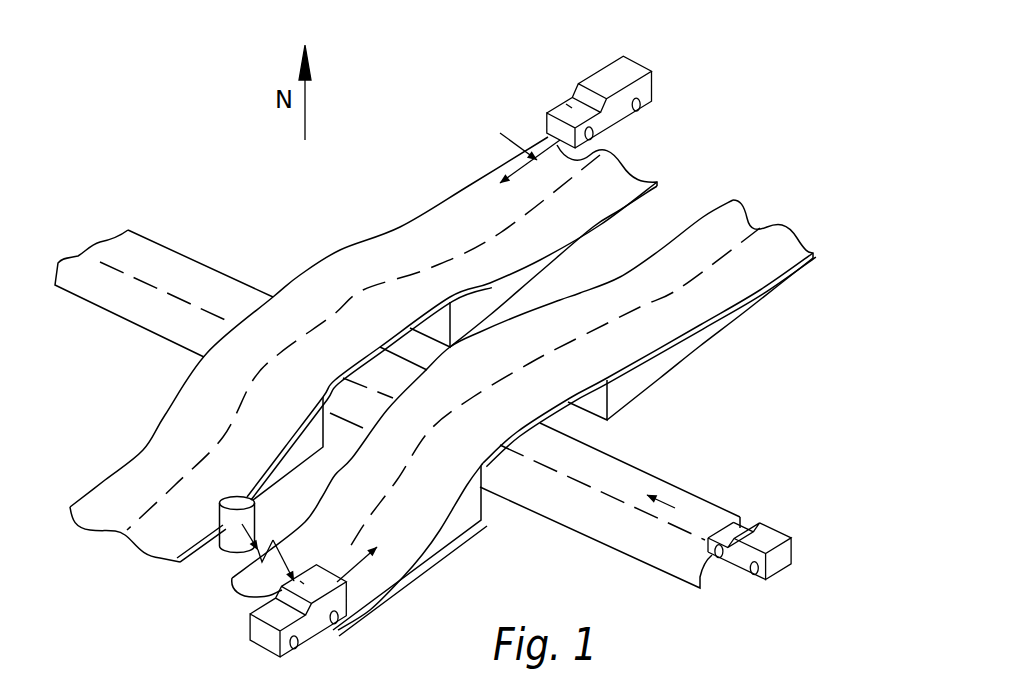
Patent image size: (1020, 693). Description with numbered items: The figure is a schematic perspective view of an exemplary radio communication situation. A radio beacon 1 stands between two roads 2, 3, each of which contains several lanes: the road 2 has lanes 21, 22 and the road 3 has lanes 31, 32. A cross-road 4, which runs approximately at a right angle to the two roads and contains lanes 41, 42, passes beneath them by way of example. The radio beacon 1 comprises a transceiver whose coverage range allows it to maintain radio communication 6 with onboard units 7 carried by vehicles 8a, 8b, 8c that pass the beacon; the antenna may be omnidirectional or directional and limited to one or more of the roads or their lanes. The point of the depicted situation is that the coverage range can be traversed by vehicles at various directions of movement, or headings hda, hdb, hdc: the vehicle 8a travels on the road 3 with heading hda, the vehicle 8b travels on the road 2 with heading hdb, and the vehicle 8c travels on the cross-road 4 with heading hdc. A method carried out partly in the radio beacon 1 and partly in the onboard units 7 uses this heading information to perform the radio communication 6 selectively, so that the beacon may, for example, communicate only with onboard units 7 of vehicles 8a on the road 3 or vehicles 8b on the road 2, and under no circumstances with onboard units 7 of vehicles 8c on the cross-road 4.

The radio beacon 1 is at (235, 530).
The road 2 is at (633, 165).
The lane 21 is at (475, 222).
The lane 22 is at (477, 267).
The road 3 is at (755, 205).
The lane 31 is at (688, 247).
The lane 32 is at (725, 293).
The cross-road 4 is at (678, 465).
The lane 41 is at (562, 497).
The lane 42 is at (622, 482).
The radio communication 6 is at (285, 572).
The onboard unit 7 is at (566, 104).
The vehicle 8a is at (265, 638).
The vehicle 8b is at (612, 82).
The vehicle 8c is at (776, 566).
The heading hda is at (350, 578).
The heading hdb is at (498, 129).
The heading hdc is at (690, 512).